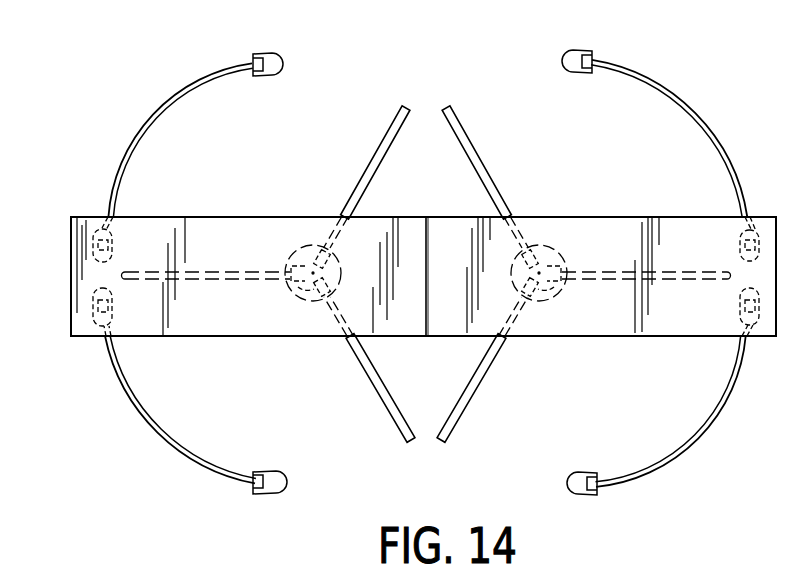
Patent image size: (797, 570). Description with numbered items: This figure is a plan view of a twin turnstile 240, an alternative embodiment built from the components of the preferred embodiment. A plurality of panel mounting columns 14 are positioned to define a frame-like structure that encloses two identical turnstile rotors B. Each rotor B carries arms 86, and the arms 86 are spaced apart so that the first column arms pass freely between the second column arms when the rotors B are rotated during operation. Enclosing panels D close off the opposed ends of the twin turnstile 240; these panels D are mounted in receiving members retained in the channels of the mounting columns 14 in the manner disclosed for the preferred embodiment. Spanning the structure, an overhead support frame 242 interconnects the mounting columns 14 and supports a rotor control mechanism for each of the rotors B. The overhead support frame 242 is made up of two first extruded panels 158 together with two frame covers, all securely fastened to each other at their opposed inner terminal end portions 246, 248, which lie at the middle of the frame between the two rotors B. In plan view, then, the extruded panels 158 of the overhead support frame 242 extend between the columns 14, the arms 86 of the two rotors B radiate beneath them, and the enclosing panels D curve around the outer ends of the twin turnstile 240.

The panel mounting column 14 is at (277, 50).
The rotor arm 86 is at (388, 138).
The first extruded panel 158 is at (266, 216).
The overhead support frame 242 is at (663, 212).
The inner terminal end portion 246 is at (426, 258).
The inner terminal end portion 248 is at (430, 235).
The twin turnstile 240 is at (670, 455).
The turnstile rotor B is at (318, 345).
The enclosing panel D is at (177, 100).